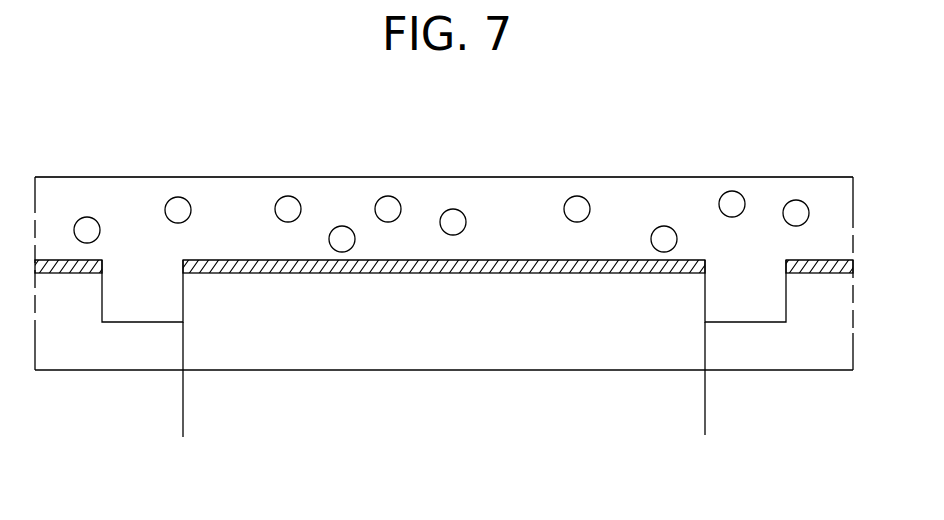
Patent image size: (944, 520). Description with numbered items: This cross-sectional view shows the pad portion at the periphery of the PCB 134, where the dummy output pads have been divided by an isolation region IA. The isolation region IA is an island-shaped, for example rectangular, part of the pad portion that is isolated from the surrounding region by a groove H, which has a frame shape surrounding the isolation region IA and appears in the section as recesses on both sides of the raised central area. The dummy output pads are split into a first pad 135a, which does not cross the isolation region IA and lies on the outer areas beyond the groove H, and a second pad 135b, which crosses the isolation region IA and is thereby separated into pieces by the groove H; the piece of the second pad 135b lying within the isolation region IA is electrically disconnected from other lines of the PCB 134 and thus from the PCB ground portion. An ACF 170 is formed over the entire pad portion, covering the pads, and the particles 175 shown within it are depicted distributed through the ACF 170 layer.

The PCB 134 is at (827, 342).
The first pad 135a is at (820, 250).
The second pad 135b is at (538, 257).
The ACF 170 is at (443, 190).
The phosphor particles 175 is at (388, 205).
The groove H is at (134, 286).
The isolation region IA is at (705, 430).